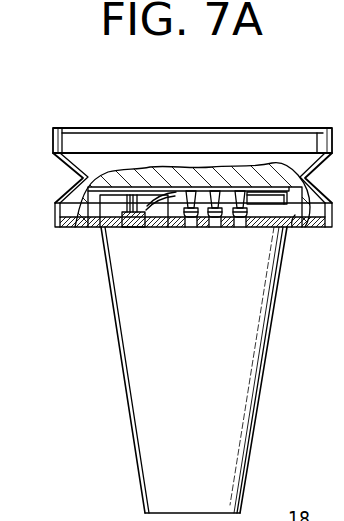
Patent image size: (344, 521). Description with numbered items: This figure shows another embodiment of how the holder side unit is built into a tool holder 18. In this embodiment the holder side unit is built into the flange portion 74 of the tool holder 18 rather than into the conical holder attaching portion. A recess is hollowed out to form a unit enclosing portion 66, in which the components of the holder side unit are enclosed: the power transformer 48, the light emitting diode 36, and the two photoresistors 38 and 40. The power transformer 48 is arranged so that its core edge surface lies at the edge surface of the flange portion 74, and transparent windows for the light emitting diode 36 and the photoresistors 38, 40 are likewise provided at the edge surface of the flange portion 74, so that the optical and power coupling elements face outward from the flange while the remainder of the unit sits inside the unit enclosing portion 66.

The tool holder 18 is at (116, 129).
The flange portion 74 is at (56, 210).
The power transformer 48 is at (101, 227).
The light emitting diode 36 is at (190, 228).
The photoresistor 38 is at (215, 228).
The photoresistor 40 is at (242, 228).
The unit enclosing portion 66 is at (297, 212).